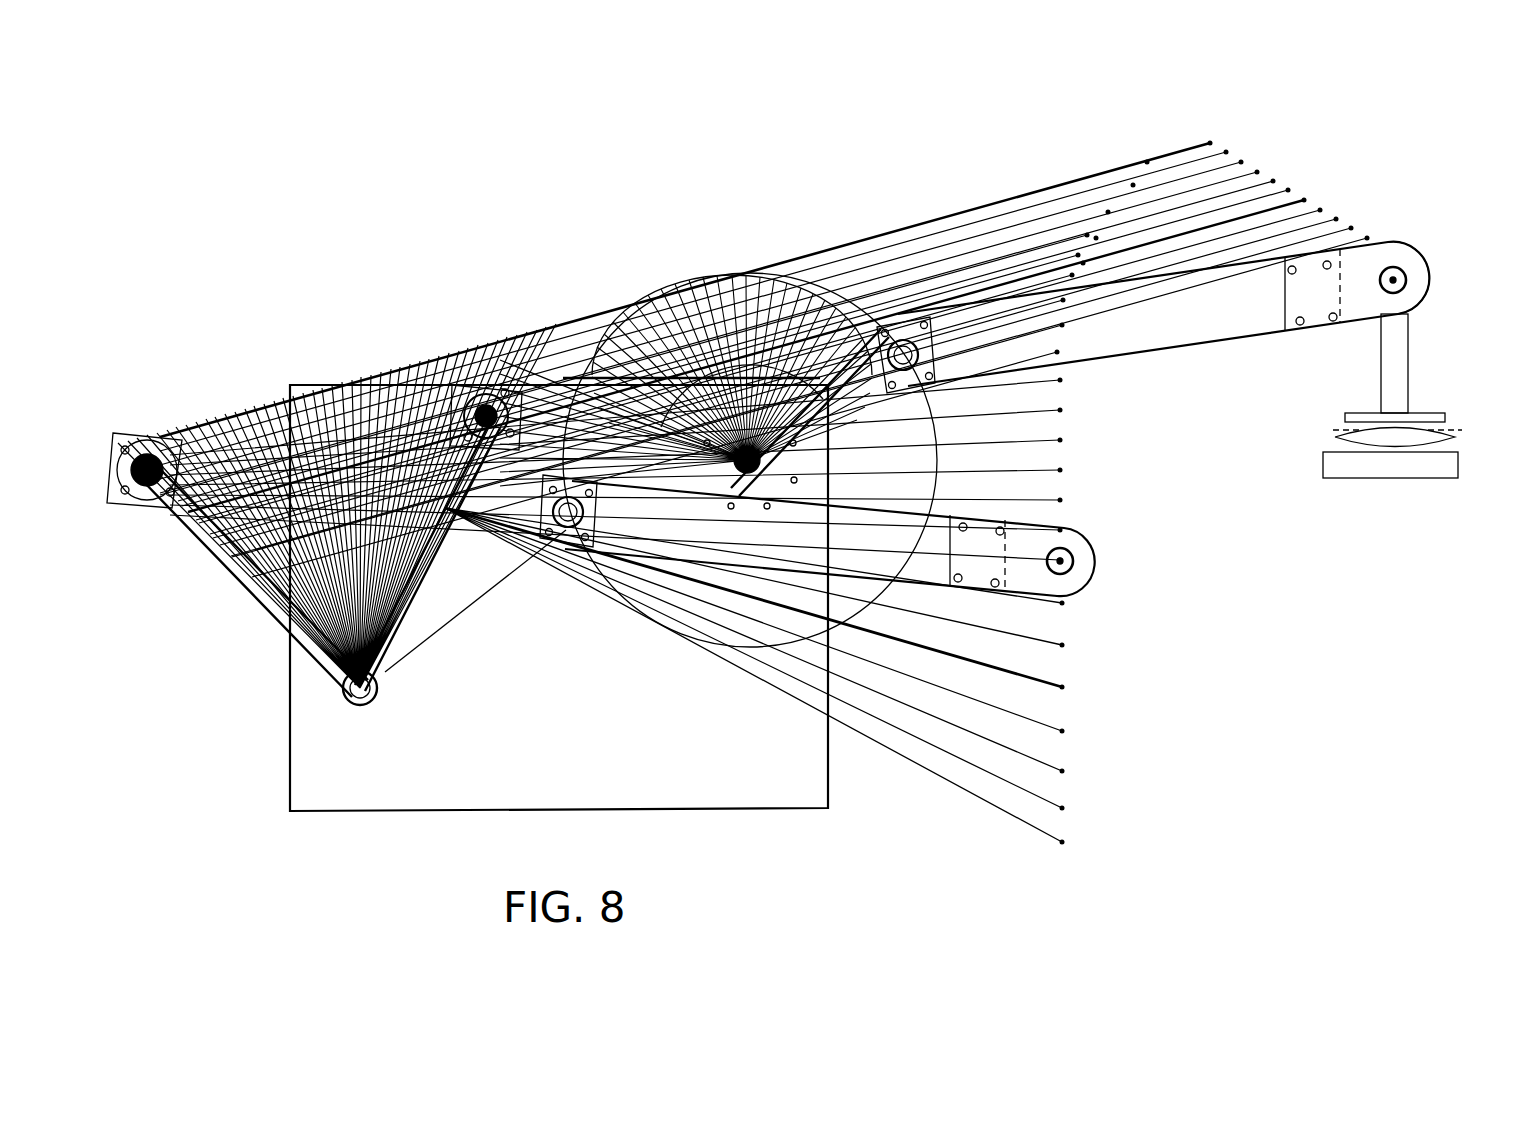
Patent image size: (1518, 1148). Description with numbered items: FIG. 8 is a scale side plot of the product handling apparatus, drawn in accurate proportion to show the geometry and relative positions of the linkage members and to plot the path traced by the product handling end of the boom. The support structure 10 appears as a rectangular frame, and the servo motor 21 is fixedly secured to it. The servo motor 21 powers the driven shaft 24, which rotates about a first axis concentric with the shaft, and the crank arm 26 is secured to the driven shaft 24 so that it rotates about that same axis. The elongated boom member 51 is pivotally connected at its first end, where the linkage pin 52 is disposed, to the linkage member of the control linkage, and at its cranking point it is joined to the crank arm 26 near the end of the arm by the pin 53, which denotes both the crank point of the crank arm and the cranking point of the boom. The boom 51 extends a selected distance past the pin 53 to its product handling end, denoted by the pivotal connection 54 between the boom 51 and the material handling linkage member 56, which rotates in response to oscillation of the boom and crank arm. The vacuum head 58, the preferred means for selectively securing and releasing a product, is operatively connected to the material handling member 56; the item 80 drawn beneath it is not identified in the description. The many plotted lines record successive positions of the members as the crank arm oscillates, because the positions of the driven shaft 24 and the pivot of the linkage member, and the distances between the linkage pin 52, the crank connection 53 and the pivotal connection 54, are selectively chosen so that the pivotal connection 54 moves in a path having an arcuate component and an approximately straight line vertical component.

The support structure 10 is at (559, 598).
The servo motor 21 is at (272, 615).
The driven shaft 24 is at (705, 625).
The crank arm 26 is at (805, 272).
The elongated boom member 51 is at (1170, 343).
The linkage pin 52 is at (138, 448).
The crank connection pin 53 is at (905, 335).
The pivotal connection 54 is at (1075, 557).
The material handling linkage member 56 is at (1420, 298).
The vacuum head 58 is at (1397, 337).
The detector 80 is at (1390, 465).